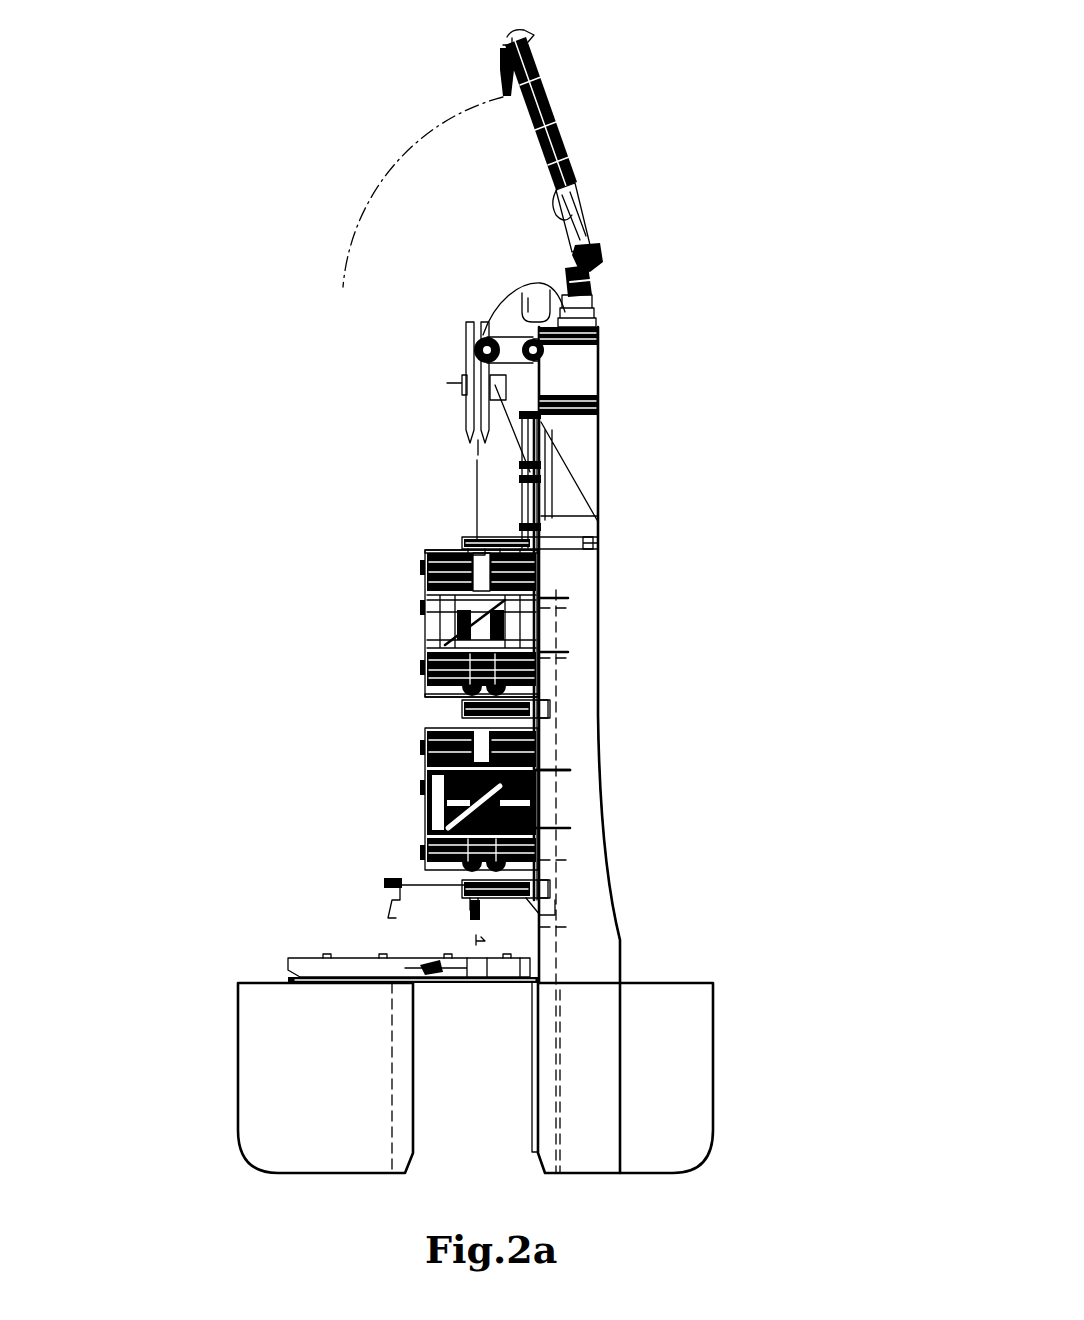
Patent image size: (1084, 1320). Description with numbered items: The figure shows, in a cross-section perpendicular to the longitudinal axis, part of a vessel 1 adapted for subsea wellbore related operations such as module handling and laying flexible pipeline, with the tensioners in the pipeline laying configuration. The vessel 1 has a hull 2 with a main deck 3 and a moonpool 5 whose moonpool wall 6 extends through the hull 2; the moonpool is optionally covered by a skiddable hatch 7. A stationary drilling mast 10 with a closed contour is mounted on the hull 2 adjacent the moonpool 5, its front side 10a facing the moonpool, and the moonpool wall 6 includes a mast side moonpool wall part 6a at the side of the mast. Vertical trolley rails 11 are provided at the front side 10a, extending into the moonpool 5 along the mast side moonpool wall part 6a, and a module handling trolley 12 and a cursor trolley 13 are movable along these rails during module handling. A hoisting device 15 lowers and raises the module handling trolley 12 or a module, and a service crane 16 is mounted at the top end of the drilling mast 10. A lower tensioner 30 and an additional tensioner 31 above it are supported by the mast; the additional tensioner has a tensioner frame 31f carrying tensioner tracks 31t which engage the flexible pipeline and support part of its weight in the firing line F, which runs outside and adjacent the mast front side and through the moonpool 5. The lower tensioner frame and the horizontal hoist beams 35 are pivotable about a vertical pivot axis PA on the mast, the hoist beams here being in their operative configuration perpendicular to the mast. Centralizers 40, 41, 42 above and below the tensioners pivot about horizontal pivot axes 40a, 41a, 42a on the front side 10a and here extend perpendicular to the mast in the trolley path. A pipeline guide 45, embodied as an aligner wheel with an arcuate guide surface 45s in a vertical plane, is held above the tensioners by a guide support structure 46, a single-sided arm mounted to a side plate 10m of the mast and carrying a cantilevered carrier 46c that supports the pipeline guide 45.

The vessel 1 is at (705, 916).
The hull 2 is at (625, 1078).
The main deck 3 is at (683, 983).
The moonpool 5 is at (475, 1033).
The moonpool wall 6 is at (416, 1035).
The mast side moonpool wall part 6a is at (535, 1123).
The skiddable hatch 7 is at (442, 970).
The drilling mast 10 is at (620, 616).
The front side of the drilling mast 10a is at (541, 453).
The side plate of the drilling mast 10m is at (590, 827).
The vertical trolley rails 11 is at (535, 478).
The module handling trolley 12 is at (525, 443).
The cursor trolley 13 is at (527, 497).
The hoisting device 15 is at (512, 332).
The service crane 16 is at (500, 71).
The tensioner 30 is at (440, 763).
The additional tensioner 31 is at (455, 640).
The tensioner tracks 31t is at (533, 577).
The tensioner frame 31f is at (542, 693).
The horizontal hoist beams 35 is at (385, 885).
The centralizer 40 is at (463, 543).
The horizontal pivot axis 40a is at (541, 531).
The centralizer 41 is at (460, 715).
The horizontal pivot axis 41a is at (550, 703).
The centralizer 42 is at (455, 890).
The horizontal pivot axis 42a is at (557, 878).
The pipeline guide 45 is at (461, 350).
The arcuate guide surface 45s is at (505, 340).
The guide support structure 46 is at (513, 402).
The cantilevered carrier 46c is at (497, 387).
The firing line F is at (491, 939).
The vertical pivot axis PA is at (547, 740).